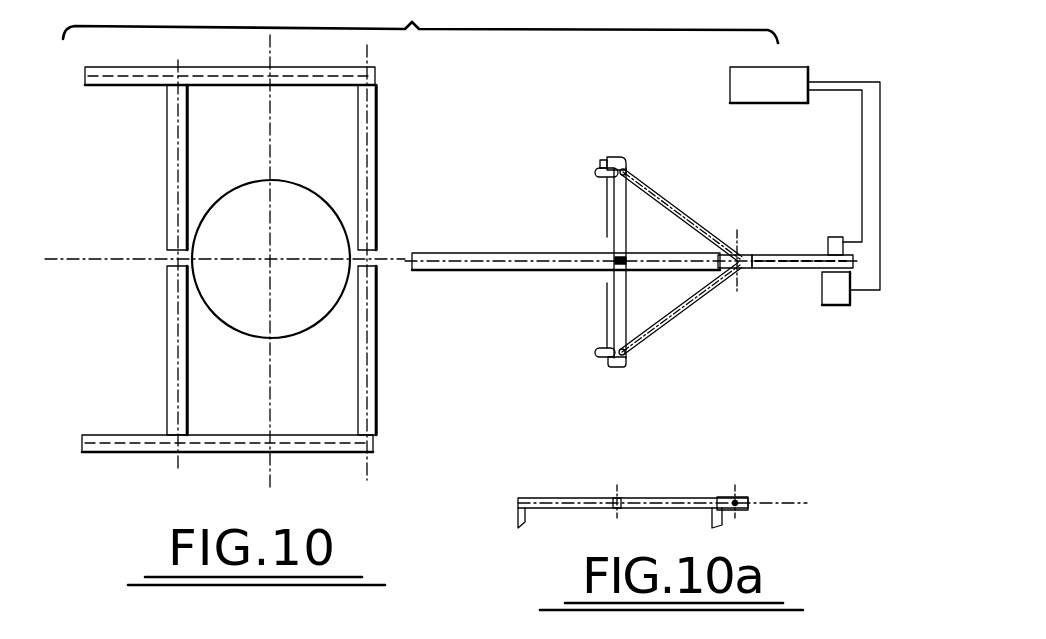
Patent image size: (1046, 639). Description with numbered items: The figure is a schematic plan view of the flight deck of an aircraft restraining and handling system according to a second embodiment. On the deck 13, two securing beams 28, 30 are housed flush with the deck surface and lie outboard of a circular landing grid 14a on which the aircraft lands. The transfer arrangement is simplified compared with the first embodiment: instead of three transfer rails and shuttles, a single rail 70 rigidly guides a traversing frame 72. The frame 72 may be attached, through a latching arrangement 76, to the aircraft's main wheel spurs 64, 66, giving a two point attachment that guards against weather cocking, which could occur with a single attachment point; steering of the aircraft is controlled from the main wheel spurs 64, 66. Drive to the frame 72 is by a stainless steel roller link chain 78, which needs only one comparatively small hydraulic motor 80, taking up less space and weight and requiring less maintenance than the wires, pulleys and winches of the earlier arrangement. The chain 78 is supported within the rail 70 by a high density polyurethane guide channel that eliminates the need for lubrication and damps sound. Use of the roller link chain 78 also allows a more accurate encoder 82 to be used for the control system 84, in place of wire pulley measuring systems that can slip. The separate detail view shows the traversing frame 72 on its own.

In FIG. 10, the deck 13 is at (135, 365).
In FIG. 10, the securing beam 28 is at (85, 75).
In FIG. 10, the securing beam 30 is at (93, 435).
In FIG. 10, the circular landing grid 14a is at (323, 285).
In FIG. 10, the rail 70 is at (505, 253).
In FIG. 10, the main wheel spur 64 is at (607, 157).
In FIG. 10, the main wheel spur 66 is at (603, 367).
In FIG. 10, the latching arrangement 76 is at (596, 170).
In FIG. 10, the traversing frame 72 is at (678, 213).
In FIG. 10A, the traversing frame 72 is at (652, 497).
In FIG. 10, the roller link chain 78 is at (808, 253).
In FIG. 10, the hydraulic motor 80 is at (838, 282).
In FIG. 10, the encoder 82 is at (842, 237).
In FIG. 10, the control system 84 is at (755, 83).